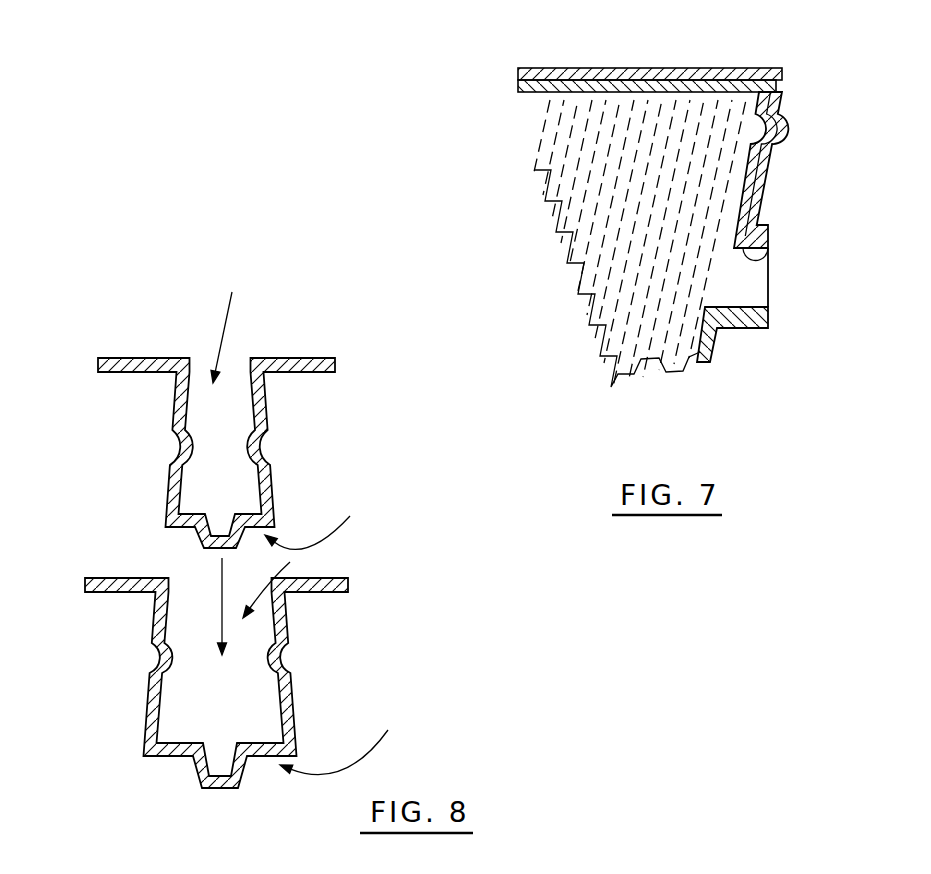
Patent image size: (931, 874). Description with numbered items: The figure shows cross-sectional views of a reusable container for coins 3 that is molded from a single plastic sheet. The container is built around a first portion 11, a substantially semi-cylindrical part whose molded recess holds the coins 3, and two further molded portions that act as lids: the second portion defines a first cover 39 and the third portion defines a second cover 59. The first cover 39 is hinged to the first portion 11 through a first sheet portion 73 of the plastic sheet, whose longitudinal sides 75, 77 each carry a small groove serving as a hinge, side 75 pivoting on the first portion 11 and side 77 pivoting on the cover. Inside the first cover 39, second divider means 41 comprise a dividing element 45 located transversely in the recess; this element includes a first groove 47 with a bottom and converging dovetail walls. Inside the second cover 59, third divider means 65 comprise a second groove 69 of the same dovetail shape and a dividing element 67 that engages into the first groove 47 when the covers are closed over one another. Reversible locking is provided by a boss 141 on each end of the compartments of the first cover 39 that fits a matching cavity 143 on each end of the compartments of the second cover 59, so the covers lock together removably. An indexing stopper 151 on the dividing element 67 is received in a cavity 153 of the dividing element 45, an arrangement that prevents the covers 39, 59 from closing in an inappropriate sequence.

In FIG. 7, the coins 3 is at (596, 182).
In FIG. 7, the first portion 11 is at (710, 361).
In FIG. 7, the first cover 39 is at (572, 87).
In FIG. 8, the first cover 39 is at (335, 577).
In FIG. 8, the second divider means 41 is at (342, 739).
In FIG. 8, the dividing element 45 is at (155, 761).
In FIG. 8, the first groove 47 is at (281, 579).
In FIG. 7, the second cover 59 is at (650, 72).
In FIG. 8, the second cover 59 is at (297, 358).
In FIG. 8, the third divider means 65 is at (317, 520).
In FIG. 8, the dividing element 67 is at (180, 527).
In FIG. 8, the second groove 69 is at (227, 327).
In FIG. 7, the first sheet portion 73 is at (773, 270).
In FIG. 7, the longitudinal side 75 is at (733, 303).
In FIG. 7, the longitudinal side 77 is at (770, 258).
In FIG. 7, the boss 141 is at (777, 110).
In FIG. 8, the boss 141 is at (173, 670).
In FIG. 7, the cavity 143 is at (786, 135).
In FIG. 8, the cavity 143 is at (181, 443).
In FIG. 8, the indexing stopper 151 is at (198, 537).
In FIG. 8, the cavity 153 is at (222, 764).